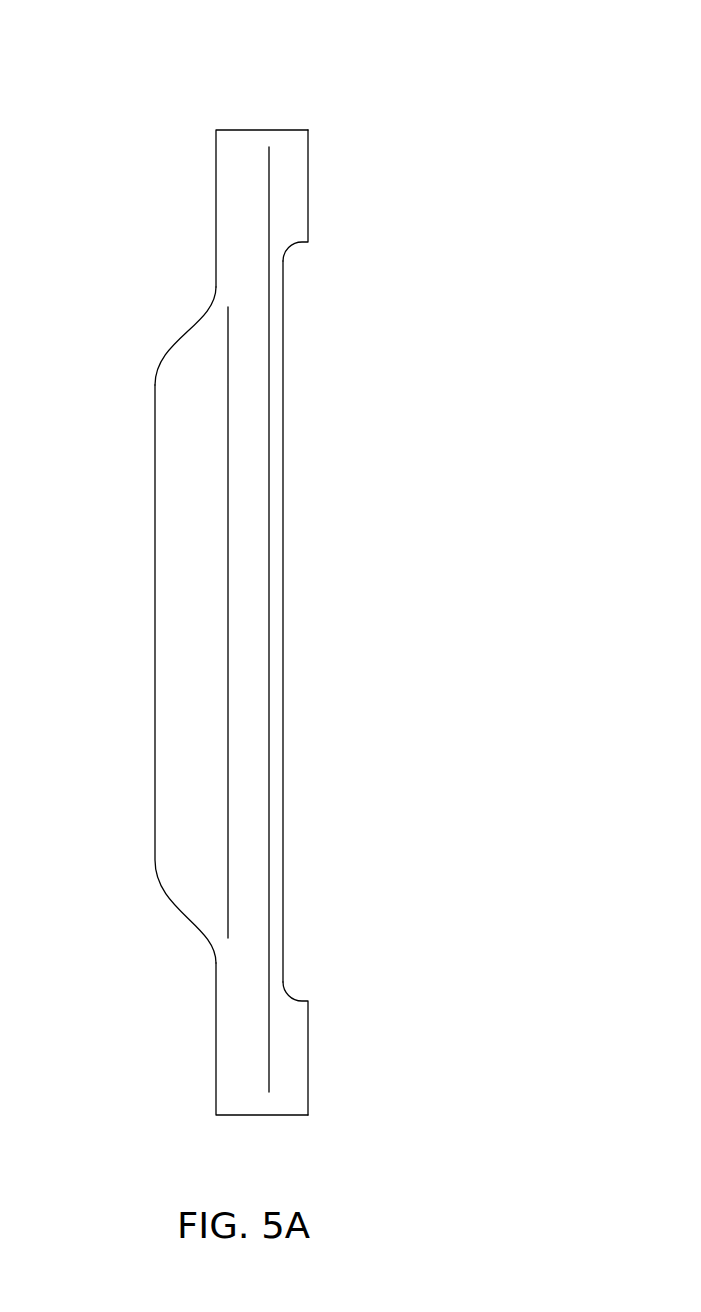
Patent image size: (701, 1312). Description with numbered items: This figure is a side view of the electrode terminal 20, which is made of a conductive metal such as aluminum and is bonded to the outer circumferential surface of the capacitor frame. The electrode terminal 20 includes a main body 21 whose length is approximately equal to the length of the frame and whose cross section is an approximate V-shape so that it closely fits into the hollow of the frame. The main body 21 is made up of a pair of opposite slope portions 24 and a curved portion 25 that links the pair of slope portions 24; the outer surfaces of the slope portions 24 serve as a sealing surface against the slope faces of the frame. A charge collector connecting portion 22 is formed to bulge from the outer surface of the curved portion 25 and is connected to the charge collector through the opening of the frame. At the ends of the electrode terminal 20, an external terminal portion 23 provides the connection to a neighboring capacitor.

The electrode terminal 20 is at (296, 94).
The main body 21 is at (147, 168).
The charge collector connecting portion 22 is at (165, 572).
The external terminal portion 23 is at (298, 177).
The slope portion 24 is at (248, 273).
The curved portion 25 is at (216, 186).